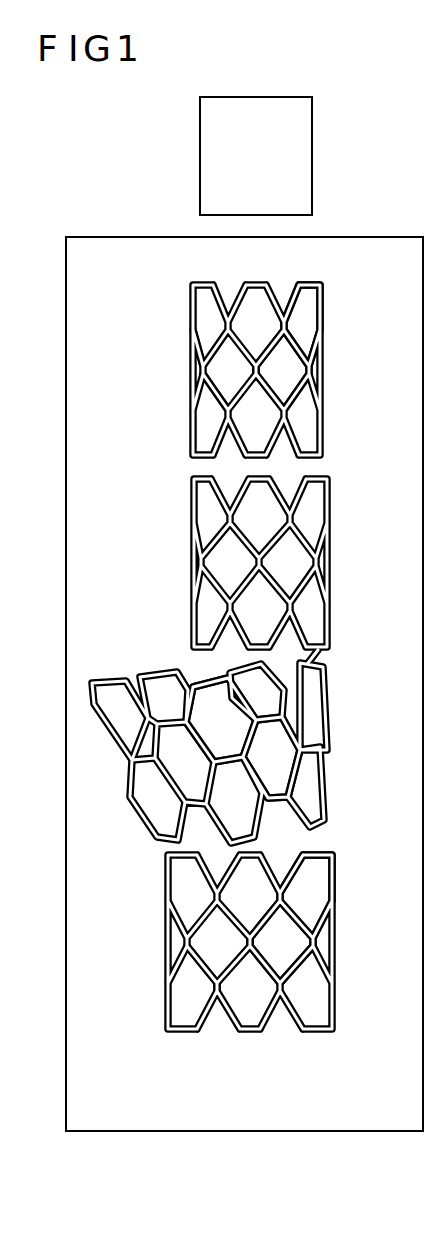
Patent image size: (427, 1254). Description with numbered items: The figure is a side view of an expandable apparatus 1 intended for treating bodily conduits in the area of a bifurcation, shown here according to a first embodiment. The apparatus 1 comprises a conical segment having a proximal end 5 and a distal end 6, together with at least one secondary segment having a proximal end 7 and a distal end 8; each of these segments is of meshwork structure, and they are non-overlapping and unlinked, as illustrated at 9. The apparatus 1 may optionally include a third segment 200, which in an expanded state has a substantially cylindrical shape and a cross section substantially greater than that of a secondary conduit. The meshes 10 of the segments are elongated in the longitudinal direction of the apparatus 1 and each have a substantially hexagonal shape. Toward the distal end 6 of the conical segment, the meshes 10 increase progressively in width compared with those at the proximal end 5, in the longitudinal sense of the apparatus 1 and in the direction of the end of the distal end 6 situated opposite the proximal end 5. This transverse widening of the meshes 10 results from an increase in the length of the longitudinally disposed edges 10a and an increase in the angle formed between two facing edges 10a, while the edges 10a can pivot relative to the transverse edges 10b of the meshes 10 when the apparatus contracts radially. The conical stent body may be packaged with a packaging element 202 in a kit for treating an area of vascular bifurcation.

The expandable apparatus 1 is at (355, 588).
The proximal end of the conical segment 5 is at (160, 935).
The distal end of the conical segment 6 is at (127, 805).
The proximal end of the secondary segment 7 is at (188, 547).
The distal end of the secondary segment 8 is at (188, 373).
The non-overlapping and unlinked region 9 is at (323, 655).
The meshes 10 is at (283, 370).
The longitudinal edges of the meshes 10a is at (223, 430).
The transverse edges of the meshes 10b is at (262, 390).
The third segment 200 is at (262, 166).
The packaging element 202 is at (116, 284).